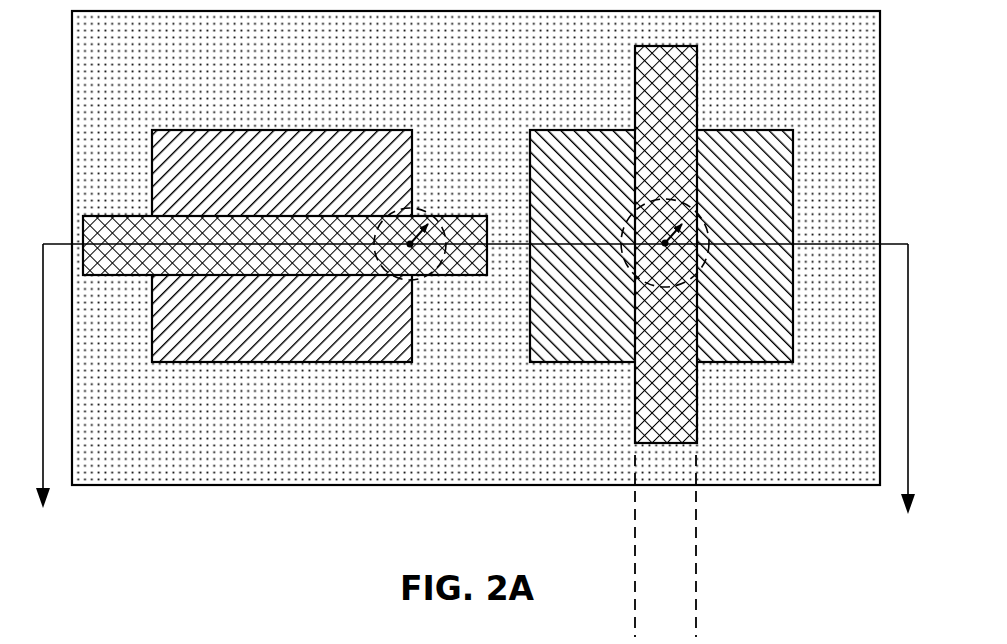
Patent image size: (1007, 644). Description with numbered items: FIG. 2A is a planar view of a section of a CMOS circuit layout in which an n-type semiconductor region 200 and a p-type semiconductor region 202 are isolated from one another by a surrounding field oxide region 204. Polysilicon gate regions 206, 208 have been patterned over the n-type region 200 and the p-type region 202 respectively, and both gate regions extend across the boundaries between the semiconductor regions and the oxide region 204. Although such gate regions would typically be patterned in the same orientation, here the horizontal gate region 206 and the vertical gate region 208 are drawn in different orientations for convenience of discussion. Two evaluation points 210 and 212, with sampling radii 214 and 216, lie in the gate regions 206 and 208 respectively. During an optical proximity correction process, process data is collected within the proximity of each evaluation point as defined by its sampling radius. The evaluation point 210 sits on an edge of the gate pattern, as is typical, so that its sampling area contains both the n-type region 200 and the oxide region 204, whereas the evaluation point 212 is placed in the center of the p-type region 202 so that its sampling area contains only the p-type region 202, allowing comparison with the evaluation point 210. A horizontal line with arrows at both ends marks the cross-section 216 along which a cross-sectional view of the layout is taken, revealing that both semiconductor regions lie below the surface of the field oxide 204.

The n-type semiconductor region 200 is at (152, 131).
The p-type semiconductor region 202 is at (793, 131).
The field oxide region 204 is at (476, 248).
The polysilicon gate region 206 is at (110, 276).
The polysilicon gate region 208 is at (633, 397).
The evaluation point 210 is at (437, 278).
The evaluation point 212 is at (670, 247).
The sampling radius 214 is at (437, 213).
The sampling radius / cross-section 216 is at (575, 103).